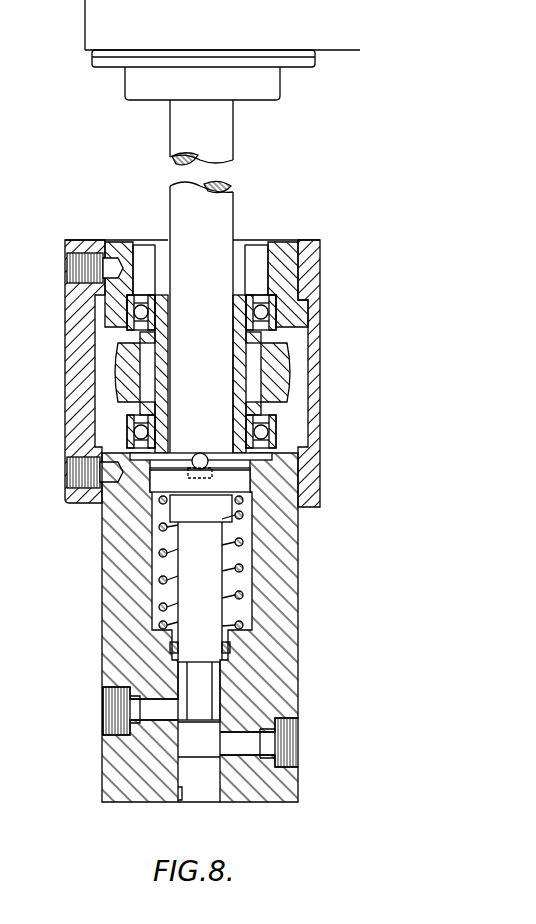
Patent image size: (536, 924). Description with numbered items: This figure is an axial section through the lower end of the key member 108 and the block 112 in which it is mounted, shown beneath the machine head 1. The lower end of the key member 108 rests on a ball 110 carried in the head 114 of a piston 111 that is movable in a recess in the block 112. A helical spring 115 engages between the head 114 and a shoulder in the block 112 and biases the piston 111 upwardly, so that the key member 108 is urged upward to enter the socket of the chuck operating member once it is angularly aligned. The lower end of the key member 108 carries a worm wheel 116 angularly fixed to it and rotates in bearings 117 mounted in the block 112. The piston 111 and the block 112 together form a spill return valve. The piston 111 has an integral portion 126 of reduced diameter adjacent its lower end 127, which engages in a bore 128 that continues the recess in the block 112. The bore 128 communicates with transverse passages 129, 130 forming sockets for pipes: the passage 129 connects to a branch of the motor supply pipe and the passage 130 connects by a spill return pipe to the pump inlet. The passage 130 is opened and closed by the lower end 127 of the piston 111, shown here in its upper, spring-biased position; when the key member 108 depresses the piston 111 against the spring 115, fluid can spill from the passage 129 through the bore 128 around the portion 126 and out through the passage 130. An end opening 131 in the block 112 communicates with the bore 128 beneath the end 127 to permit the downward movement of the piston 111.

The machine spindle head 1 is at (125, 80).
The key member 108 is at (177, 203).
The ball 110 is at (200, 457).
The piston 111 is at (186, 567).
The block 112 is at (112, 648).
The head 114 is at (128, 496).
The helical spring 115 is at (163, 614).
The worm wheel 116 is at (117, 358).
The bearings 117 is at (135, 305).
The portion of reduced diameter 126 is at (196, 688).
The lower end of the piston 127 is at (185, 747).
The bore 128 is at (180, 788).
The transverse passage 129 is at (133, 713).
The transverse passage 130 is at (230, 737).
The end opening 131 is at (197, 792).